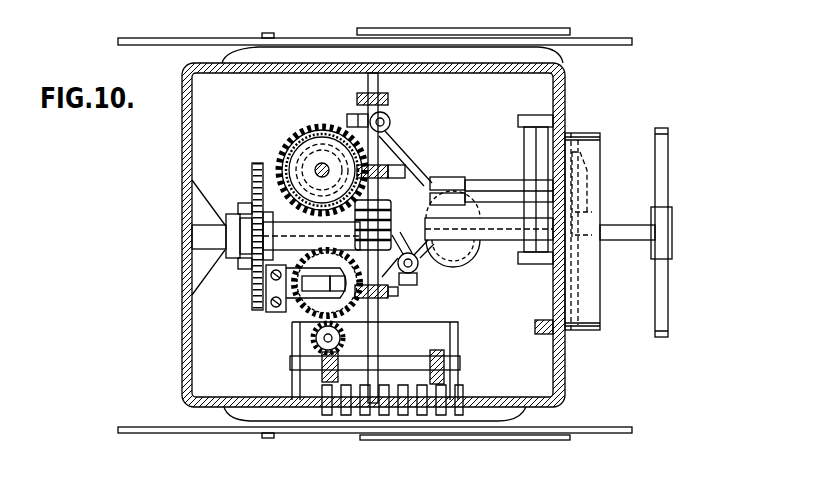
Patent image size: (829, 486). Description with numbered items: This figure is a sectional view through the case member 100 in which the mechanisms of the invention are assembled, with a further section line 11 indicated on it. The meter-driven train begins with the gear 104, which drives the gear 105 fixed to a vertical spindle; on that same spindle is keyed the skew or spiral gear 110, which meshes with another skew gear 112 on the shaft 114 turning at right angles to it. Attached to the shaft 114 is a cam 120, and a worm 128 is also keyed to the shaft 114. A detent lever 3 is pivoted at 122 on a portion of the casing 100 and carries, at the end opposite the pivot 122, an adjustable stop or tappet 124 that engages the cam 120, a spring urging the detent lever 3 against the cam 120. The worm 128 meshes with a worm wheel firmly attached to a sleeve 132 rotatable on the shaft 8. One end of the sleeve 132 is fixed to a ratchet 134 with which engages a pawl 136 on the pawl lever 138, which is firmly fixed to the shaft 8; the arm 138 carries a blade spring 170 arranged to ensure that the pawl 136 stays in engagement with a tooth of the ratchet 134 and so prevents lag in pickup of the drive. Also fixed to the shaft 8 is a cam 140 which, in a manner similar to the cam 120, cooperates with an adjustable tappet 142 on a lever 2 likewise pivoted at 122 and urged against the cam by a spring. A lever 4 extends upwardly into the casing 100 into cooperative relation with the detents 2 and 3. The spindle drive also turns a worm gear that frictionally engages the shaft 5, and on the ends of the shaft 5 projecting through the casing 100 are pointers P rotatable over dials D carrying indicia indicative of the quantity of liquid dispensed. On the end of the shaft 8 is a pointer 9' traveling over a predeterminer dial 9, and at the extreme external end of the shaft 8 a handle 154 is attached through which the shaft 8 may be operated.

The case member 100 is at (566, 106).
The dials D is at (610, 46).
The pointers P is at (572, 30).
The section line 11- 11 is at (528, 10).
The sleeve 132 is at (296, 230).
The pawl lever 138 is at (246, 246).
The blade spring 170 is at (244, 213).
The ratchet 134 is at (252, 172).
The gear 105 is at (280, 152).
The skew or spiral gear 110 is at (305, 140).
The shaft 114 is at (380, 320).
The cam 120 is at (348, 118).
The adjustable stop or tappet 124 is at (392, 120).
The skew gear 112 is at (396, 157).
The lever 4 is at (458, 176).
The detent lever 3 is at (492, 166).
The lever 2 is at (494, 241).
The shaft 8 is at (498, 242).
The pivot 122 is at (530, 115).
The gear 104 is at (390, 178).
The cam 140 is at (388, 216).
The adjustable tappet 142 is at (418, 268).
The worm 128 is at (343, 252).
The pawl 136 is at (262, 288).
The shaft 5 is at (385, 358).
The dial 9 is at (600, 231).
The pointer 9' is at (606, 196).
The handle 154 is at (668, 190).